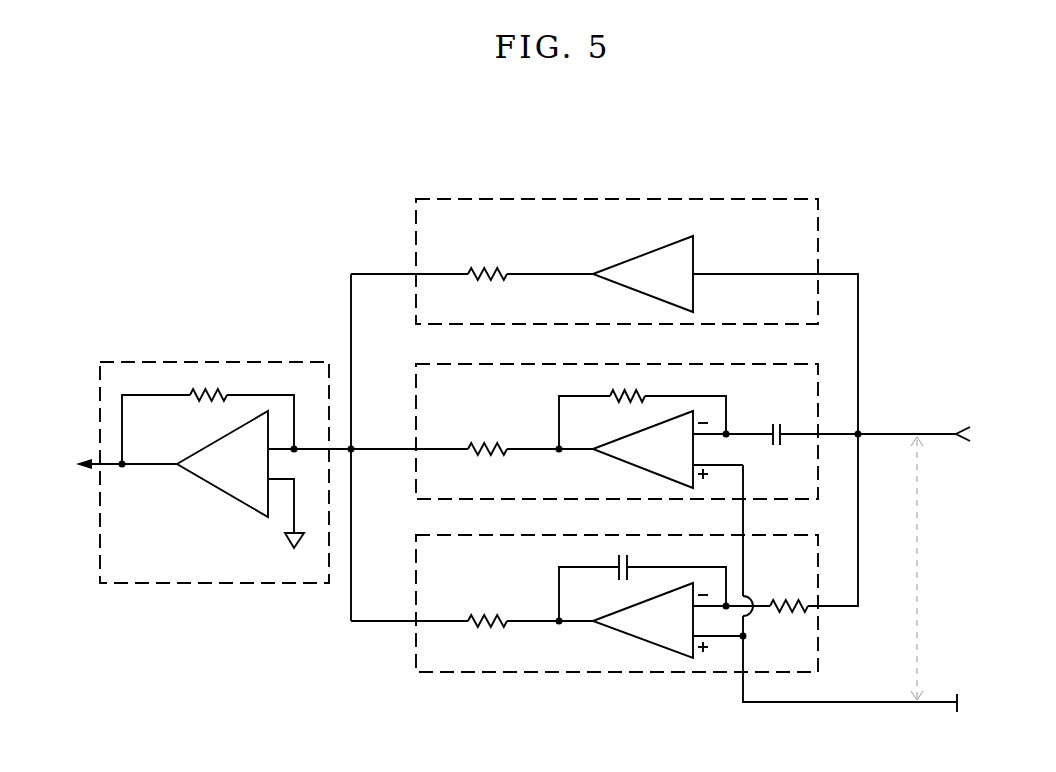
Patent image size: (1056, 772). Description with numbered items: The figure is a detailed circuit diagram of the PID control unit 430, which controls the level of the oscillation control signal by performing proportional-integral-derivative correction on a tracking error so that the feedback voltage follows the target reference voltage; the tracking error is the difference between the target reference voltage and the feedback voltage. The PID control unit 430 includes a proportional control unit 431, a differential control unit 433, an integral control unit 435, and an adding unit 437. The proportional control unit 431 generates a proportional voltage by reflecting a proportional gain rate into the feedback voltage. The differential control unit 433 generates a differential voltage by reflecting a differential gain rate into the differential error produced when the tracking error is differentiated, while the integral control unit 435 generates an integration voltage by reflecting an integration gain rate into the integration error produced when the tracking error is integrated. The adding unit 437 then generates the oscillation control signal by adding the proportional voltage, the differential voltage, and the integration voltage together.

The PID control unit 430 is at (909, 191).
The proportional control unit 431 is at (757, 199).
The differential control unit 433 is at (757, 364).
The integral control unit 435 is at (757, 535).
The adding unit 437 is at (216, 362).